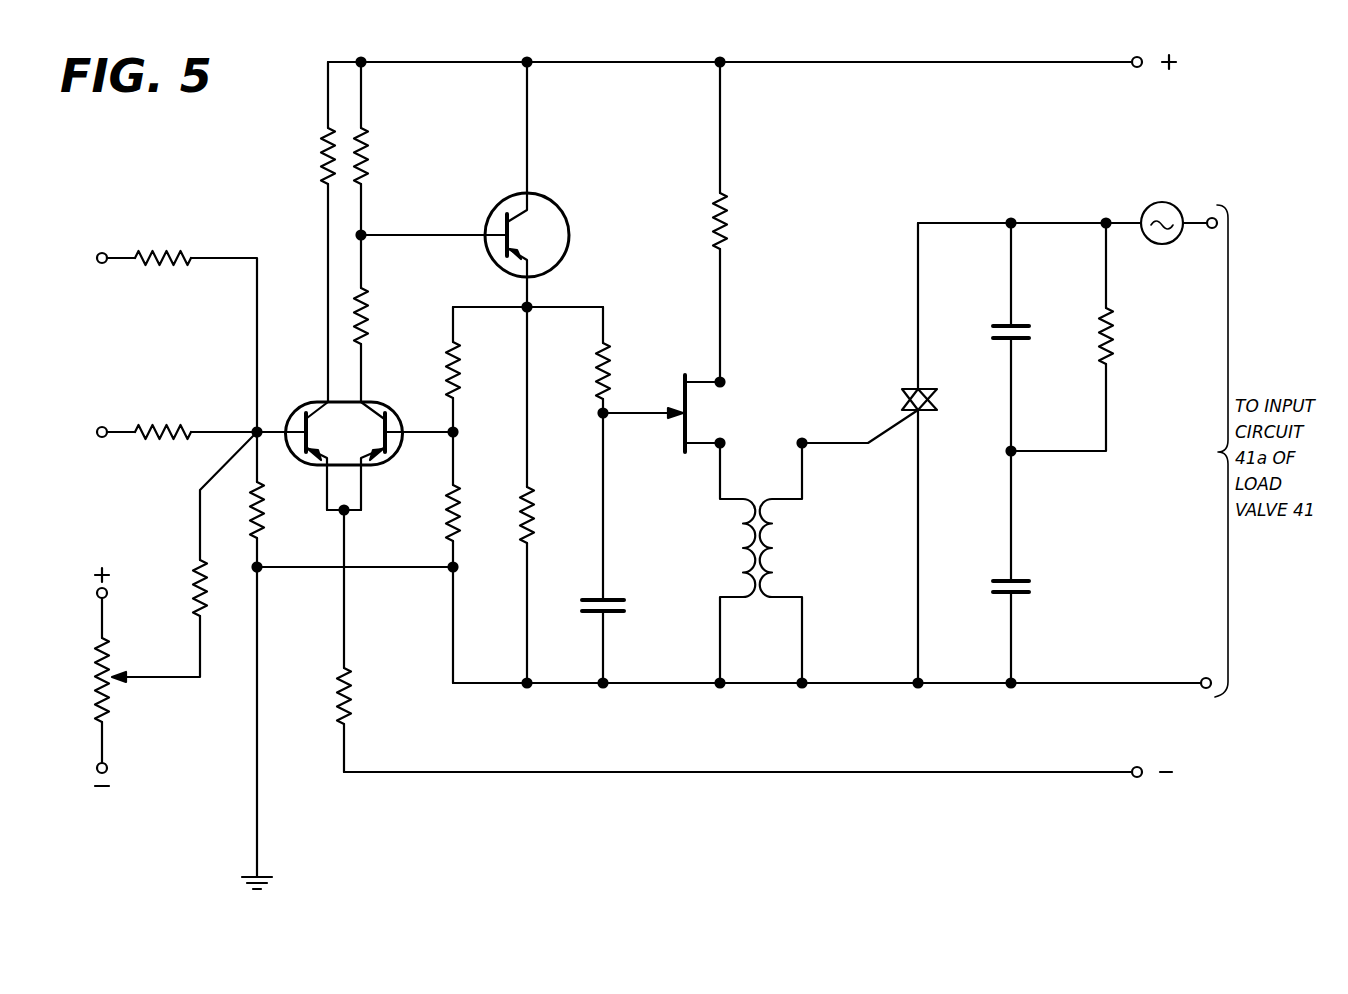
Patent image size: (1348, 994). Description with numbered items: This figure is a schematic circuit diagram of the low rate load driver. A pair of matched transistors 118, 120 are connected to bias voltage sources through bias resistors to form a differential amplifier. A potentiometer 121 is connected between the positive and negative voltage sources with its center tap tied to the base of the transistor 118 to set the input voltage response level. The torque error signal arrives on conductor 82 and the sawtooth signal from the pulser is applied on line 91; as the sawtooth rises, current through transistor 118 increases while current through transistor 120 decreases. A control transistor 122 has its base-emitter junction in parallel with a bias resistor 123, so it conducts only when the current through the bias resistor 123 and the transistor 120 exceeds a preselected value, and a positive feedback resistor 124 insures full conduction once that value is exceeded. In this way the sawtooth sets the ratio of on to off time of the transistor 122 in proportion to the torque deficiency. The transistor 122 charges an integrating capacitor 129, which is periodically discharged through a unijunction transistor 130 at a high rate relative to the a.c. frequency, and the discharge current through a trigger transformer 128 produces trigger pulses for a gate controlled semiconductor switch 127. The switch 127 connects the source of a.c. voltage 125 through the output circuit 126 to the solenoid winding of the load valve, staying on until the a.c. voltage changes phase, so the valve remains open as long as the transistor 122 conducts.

The conductor 82 is at (120, 255).
The conductor 91 is at (120, 432).
The transistor 118 is at (292, 400).
The transistor 120 is at (392, 402).
The potentiometer 121 is at (118, 693).
The control transistor 122 is at (550, 210).
The bias resistor 123 is at (378, 140).
The positive feedback resistor 124 is at (458, 370).
The source of a.c. voltage 125 is at (1166, 204).
The output circuit 126 is at (1122, 220).
The gate controlled semiconductor switch 127 is at (908, 388).
The trigger transformer 128 is at (790, 547).
The integrating capacitor 129 is at (618, 602).
The unijunction transistor 130 is at (680, 388).